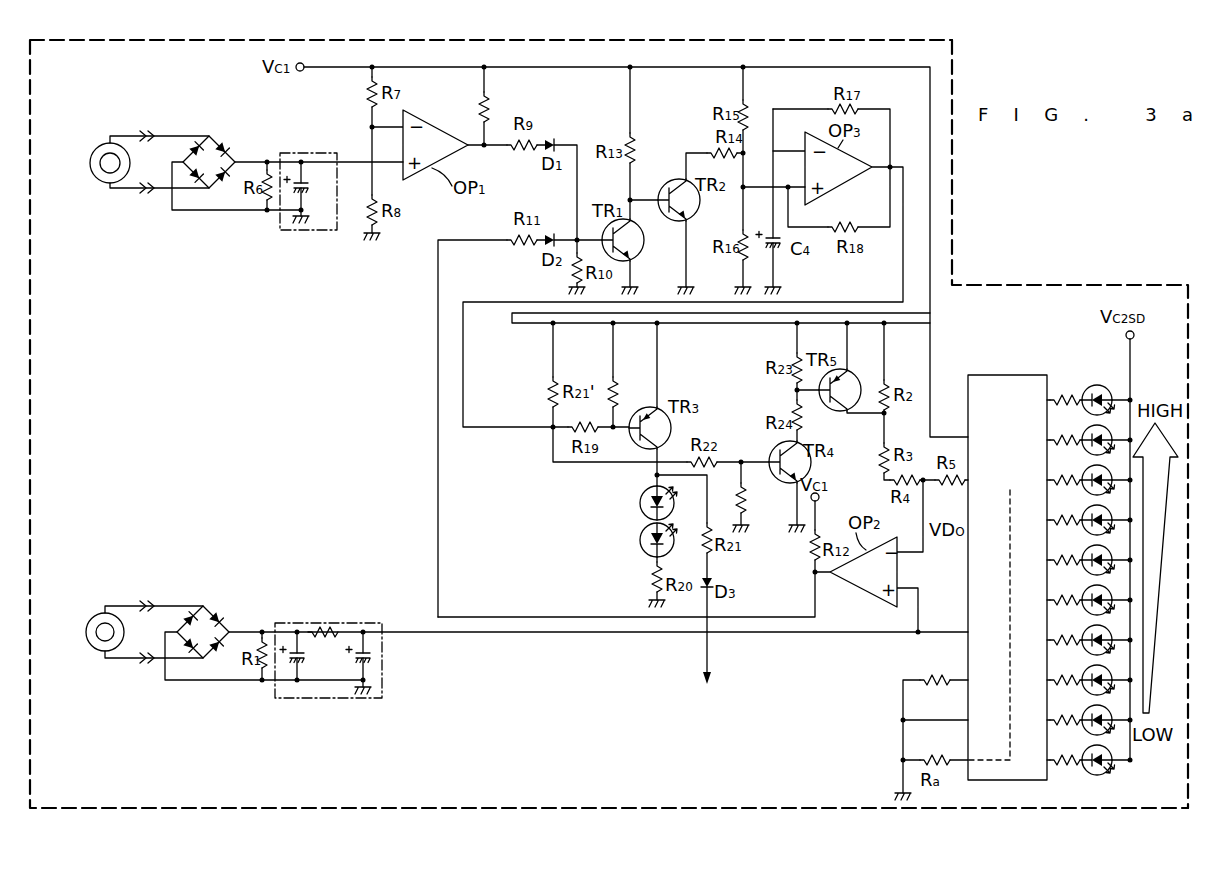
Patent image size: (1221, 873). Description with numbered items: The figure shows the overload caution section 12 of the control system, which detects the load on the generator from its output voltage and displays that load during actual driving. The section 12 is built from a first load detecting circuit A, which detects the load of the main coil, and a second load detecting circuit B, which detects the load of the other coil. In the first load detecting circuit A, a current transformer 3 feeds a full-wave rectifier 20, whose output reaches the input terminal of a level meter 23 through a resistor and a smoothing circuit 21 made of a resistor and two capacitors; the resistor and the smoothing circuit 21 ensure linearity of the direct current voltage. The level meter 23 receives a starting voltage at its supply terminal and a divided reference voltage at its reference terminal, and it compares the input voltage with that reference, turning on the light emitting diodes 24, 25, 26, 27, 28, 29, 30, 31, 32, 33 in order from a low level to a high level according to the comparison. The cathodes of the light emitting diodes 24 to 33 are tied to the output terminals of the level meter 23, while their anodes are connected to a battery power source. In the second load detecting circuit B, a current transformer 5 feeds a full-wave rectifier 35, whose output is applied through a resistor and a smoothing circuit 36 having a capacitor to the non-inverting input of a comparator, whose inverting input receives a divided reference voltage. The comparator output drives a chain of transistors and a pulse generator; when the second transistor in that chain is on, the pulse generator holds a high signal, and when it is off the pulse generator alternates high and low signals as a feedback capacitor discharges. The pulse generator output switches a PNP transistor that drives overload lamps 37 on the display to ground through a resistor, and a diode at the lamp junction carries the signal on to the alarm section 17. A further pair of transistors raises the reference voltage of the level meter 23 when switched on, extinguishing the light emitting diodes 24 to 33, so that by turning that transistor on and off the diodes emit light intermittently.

The current transformer 3 is at (94, 648).
The current transformer 5 is at (92, 182).
The overload caution section 12 is at (1040, 284).
The alarm section 17 is at (709, 650).
The full-wave rectifier 20 is at (200, 672).
The smoothing circuit 21 is at (299, 703).
The level meter 23 is at (1013, 358).
The light emitting diode 24 is at (1084, 772).
The light emitting diode 25 is at (1085, 733).
The light emitting diode 26 is at (1085, 693).
The light emitting diode 27 is at (1085, 653).
The light emitting diode 28 is at (1085, 613).
The light emitting diode 29 is at (1085, 573).
The light emitting diode 30 is at (1085, 533).
The light emitting diode 31 is at (1085, 493).
The light emitting diode 32 is at (1085, 453).
The light emitting diode 33 is at (1087, 389).
The full-wave rectifier 35 is at (230, 146).
The smoothing circuit 36 is at (316, 152).
The overload lamps 37 is at (640, 523).
The first load detecting circuit A is at (244, 667).
The second load detecting circuit B is at (283, 142).